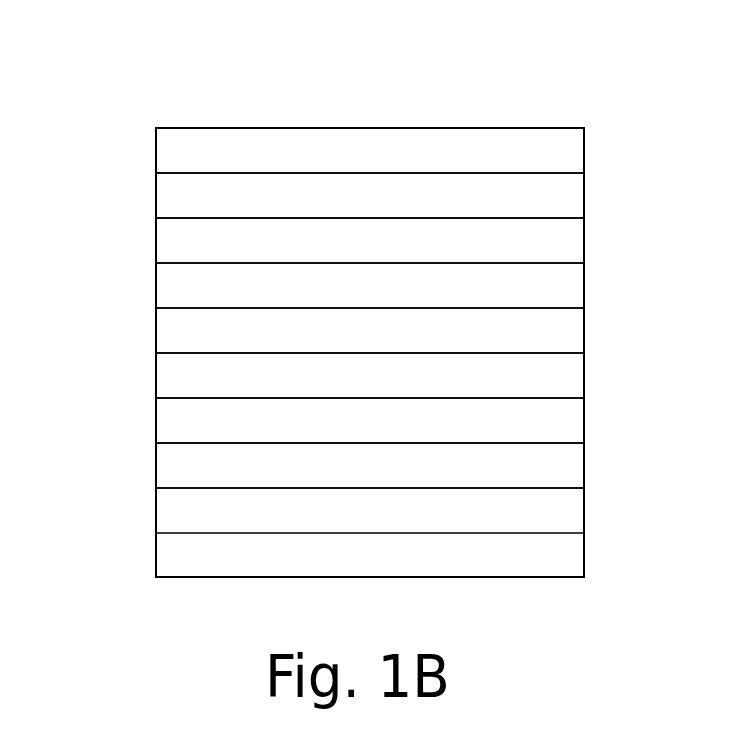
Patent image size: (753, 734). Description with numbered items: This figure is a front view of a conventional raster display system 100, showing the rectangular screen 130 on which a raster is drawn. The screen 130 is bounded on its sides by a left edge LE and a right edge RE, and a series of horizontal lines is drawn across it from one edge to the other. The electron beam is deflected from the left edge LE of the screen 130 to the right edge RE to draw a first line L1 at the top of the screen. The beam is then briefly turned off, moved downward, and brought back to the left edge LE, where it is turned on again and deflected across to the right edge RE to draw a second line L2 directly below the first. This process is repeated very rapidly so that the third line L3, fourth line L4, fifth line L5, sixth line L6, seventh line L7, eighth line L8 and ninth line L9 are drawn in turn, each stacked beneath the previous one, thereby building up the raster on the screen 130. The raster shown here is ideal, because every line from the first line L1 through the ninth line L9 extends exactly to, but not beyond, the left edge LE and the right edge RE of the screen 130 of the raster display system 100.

The raster display system 100 is at (514, 92).
The screen 130 is at (548, 139).
The left edge LE is at (154, 128).
The right edge RE is at (585, 197).
The first line L1 is at (173, 173).
The second line L2 is at (173, 218).
The third line L3 is at (173, 263).
The fourth line L4 is at (173, 308).
The fifth line L5 is at (173, 353).
The sixth line L6 is at (173, 398).
The seventh line L7 is at (173, 443).
The eighth line L8 is at (173, 488).
The ninth line L9 is at (173, 533).